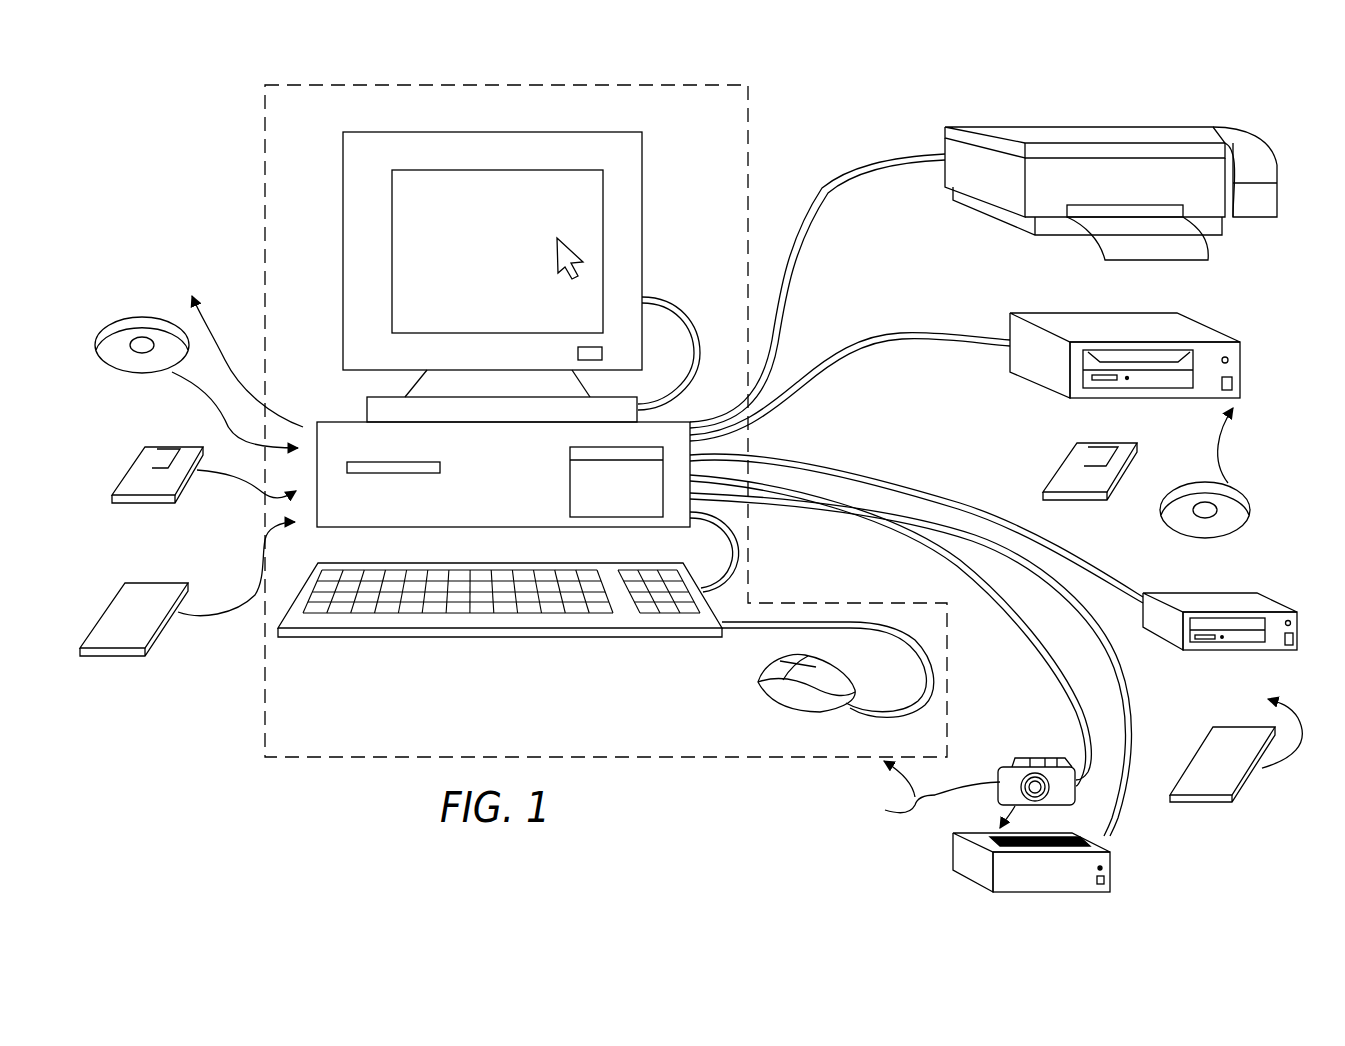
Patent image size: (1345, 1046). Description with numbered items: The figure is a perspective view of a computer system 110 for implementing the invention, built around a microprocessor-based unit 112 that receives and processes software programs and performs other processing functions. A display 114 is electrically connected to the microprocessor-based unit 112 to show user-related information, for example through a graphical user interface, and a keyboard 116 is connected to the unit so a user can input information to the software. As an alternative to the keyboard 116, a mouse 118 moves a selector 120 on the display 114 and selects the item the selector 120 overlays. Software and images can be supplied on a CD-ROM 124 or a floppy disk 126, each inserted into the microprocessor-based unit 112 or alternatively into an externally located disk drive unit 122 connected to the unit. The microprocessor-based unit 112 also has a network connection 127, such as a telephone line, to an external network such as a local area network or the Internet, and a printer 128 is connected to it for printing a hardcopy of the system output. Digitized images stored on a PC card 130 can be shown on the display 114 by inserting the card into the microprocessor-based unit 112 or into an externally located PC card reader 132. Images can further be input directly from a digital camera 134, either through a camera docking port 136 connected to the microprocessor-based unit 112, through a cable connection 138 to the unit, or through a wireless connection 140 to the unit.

The computer system 110 is at (760, 103).
The microprocessor-based unit 112 is at (340, 422).
The display 114 is at (467, 132).
The keyboard 116 is at (435, 640).
The mouse 118 is at (772, 686).
The selector 120 is at (580, 257).
The externally located disk drive unit 122 is at (1058, 318).
The compact disk-read only memory (CD-ROM) 124 is at (118, 325).
The floppy disk 126 is at (135, 462).
The network connection 127 is at (223, 348).
The printer 128 is at (1067, 127).
The personal computer card (PC card) 130 is at (122, 600).
The externally located PC card reader 132 is at (1237, 650).
The digital camera 134 is at (1033, 757).
The camera docking port 136 is at (972, 871).
The cable connection 138 is at (1047, 637).
The wireless connection 140 is at (921, 789).